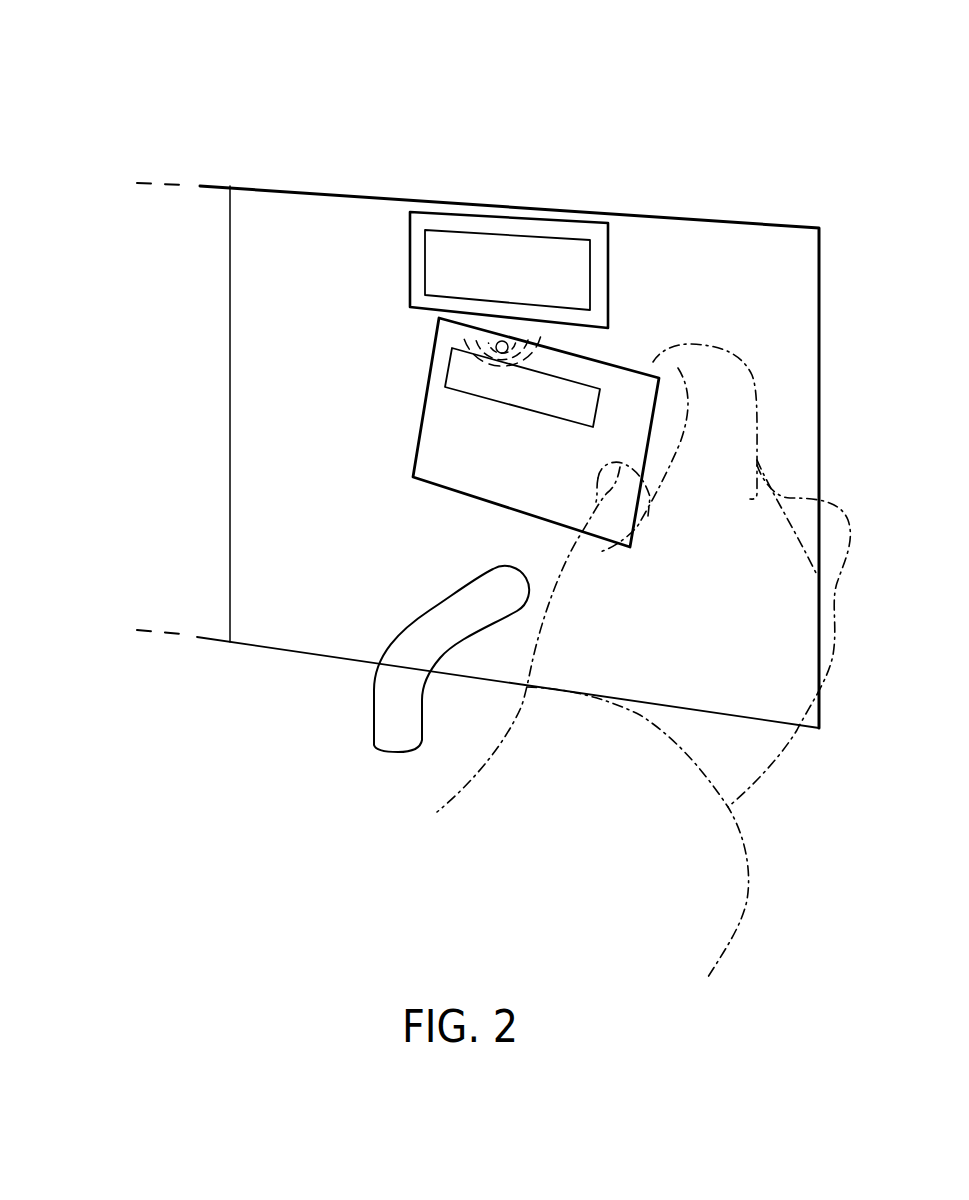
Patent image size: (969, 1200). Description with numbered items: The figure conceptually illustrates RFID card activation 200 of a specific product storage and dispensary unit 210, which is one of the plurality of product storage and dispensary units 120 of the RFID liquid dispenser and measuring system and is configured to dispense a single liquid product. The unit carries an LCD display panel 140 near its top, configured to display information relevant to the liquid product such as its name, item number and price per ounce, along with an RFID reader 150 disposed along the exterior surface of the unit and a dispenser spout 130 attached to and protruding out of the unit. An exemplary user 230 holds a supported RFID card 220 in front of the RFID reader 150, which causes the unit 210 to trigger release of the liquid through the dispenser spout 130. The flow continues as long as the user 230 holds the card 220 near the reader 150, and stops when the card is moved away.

The RFID card activation 200 is at (189, 90).
The product storage and dispensary units 120 is at (465, 455).
The specific product storage and dispensary unit 210 is at (803, 260).
The LCD display panel 140 is at (410, 275).
The RFID reader 150 is at (445, 388).
The supported RFID card 220 is at (418, 447).
The dispenser spout 130 is at (374, 719).
The exemplary user 230 is at (718, 948).